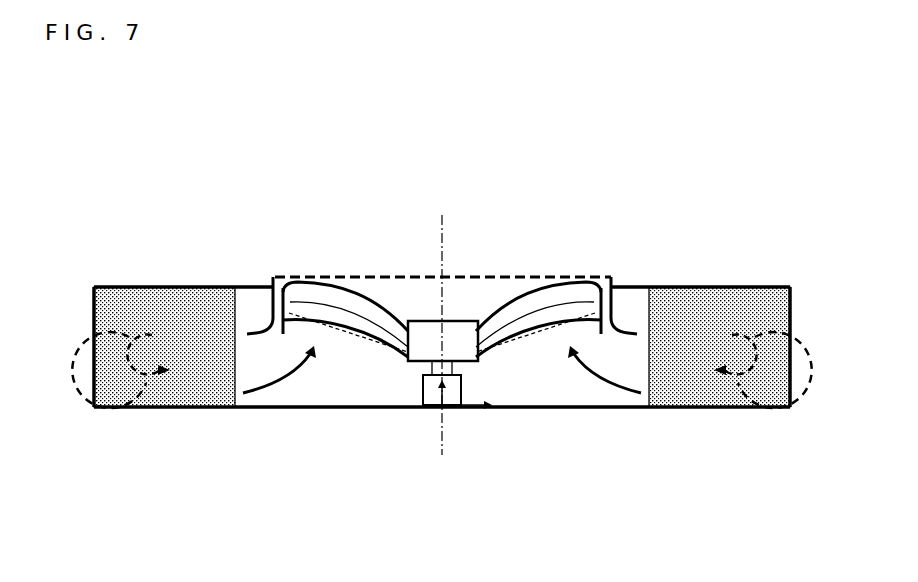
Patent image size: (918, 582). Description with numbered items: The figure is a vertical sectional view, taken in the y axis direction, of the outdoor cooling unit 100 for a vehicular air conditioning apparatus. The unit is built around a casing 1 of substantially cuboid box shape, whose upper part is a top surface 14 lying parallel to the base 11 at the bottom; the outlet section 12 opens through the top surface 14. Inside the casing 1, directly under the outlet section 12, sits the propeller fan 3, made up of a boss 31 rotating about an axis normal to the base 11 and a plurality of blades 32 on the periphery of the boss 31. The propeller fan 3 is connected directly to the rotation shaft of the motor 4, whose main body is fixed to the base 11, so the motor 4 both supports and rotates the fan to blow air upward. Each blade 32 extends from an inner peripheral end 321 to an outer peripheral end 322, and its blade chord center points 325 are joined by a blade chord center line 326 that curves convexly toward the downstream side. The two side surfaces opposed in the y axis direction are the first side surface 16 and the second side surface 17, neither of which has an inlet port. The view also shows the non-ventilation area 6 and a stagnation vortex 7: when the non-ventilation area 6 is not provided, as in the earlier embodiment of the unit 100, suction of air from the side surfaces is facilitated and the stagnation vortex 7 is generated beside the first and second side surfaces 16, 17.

The outdoor cooling unit 100 is at (474, 554).
The casing 1 is at (608, 424).
The propeller fan 3 is at (480, 298).
The motor 4 is at (433, 406).
The non-ventilation area 6 is at (119, 300).
The stagnation vortex 7 is at (147, 398).
The base 11 is at (520, 409).
The outlet section 12 is at (277, 279).
The top surface 14 is at (617, 287).
The first side surface 16 is at (792, 332).
The second side surface 17 is at (94, 330).
The boss 31 is at (453, 330).
The blade 32 is at (385, 290).
The inner peripheral end 321 is at (407, 360).
The outer peripheral end 322 is at (211, 399).
The blade chord center point 325 is at (284, 388).
The blade chord center line 326 is at (322, 306).